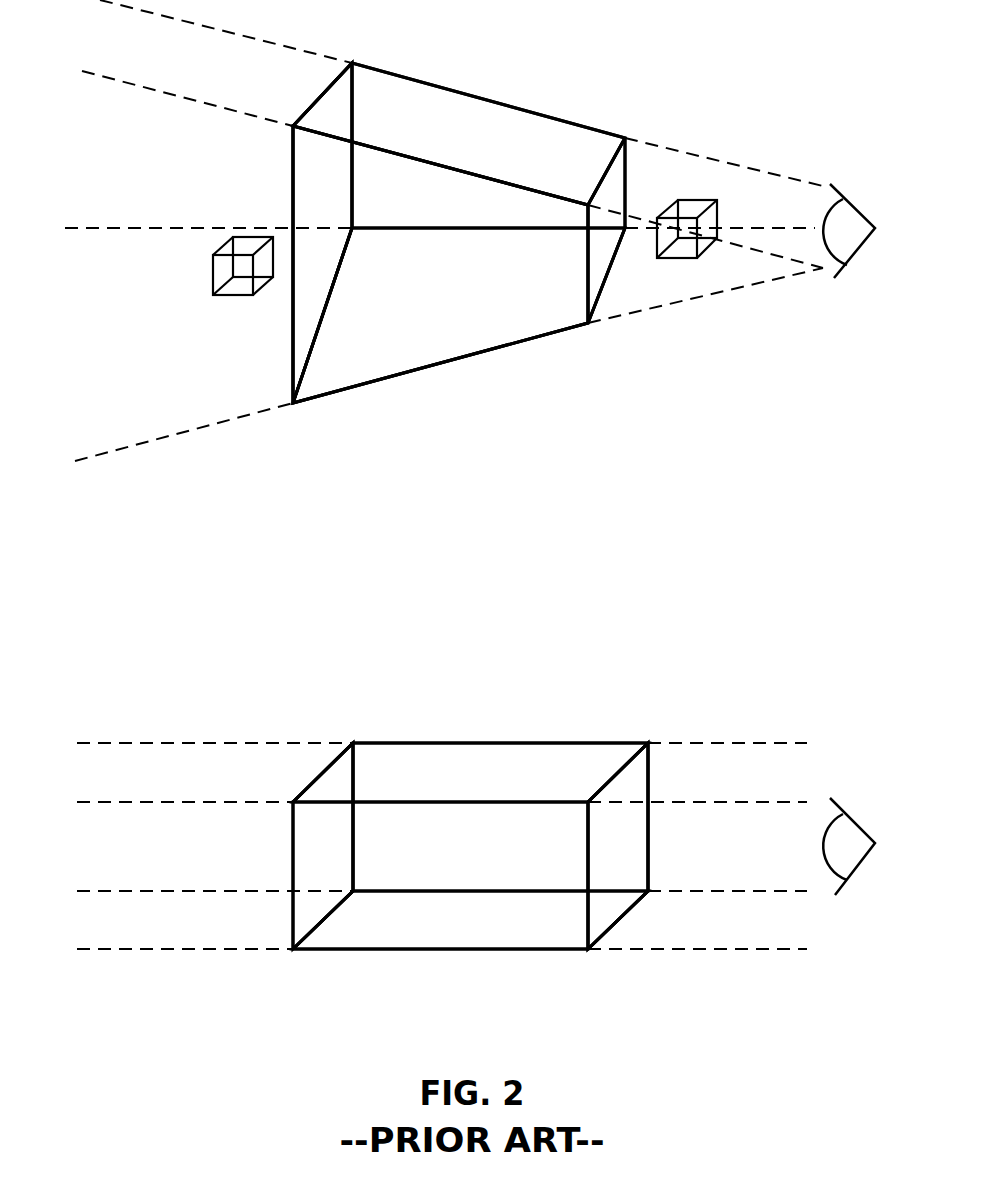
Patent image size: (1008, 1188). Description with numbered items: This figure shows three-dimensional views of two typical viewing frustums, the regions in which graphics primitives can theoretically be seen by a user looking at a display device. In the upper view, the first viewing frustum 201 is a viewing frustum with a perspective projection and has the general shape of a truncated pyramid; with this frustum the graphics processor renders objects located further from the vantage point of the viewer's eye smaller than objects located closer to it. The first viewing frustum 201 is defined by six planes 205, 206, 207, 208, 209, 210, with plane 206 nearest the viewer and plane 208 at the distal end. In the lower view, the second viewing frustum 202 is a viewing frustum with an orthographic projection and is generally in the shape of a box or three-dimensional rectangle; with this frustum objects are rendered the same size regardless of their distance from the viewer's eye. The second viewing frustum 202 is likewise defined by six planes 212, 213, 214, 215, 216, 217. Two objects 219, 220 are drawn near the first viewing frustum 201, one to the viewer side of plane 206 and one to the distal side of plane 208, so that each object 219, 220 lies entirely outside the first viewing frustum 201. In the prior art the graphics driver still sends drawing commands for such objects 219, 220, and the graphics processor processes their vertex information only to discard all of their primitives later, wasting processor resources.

The first viewing frustum 201 is at (462, 365).
The second viewing frustum 202 is at (482, 953).
The frustum plane 205 is at (462, 110).
The frustum plane 206 is at (608, 200).
The frustum plane 207 is at (550, 317).
The frustum plane 208 is at (317, 117).
The frustum plane 209 is at (382, 187).
The frustum plane 210 is at (362, 298).
The frustum plane 212 is at (462, 763).
The frustum plane 213 is at (633, 868).
The frustum plane 214 is at (432, 940).
The frustum plane 215 is at (322, 792).
The frustum plane 216 is at (627, 788).
The frustum plane 217 is at (323, 902).
The object 219 is at (683, 262).
The object 220 is at (240, 298).